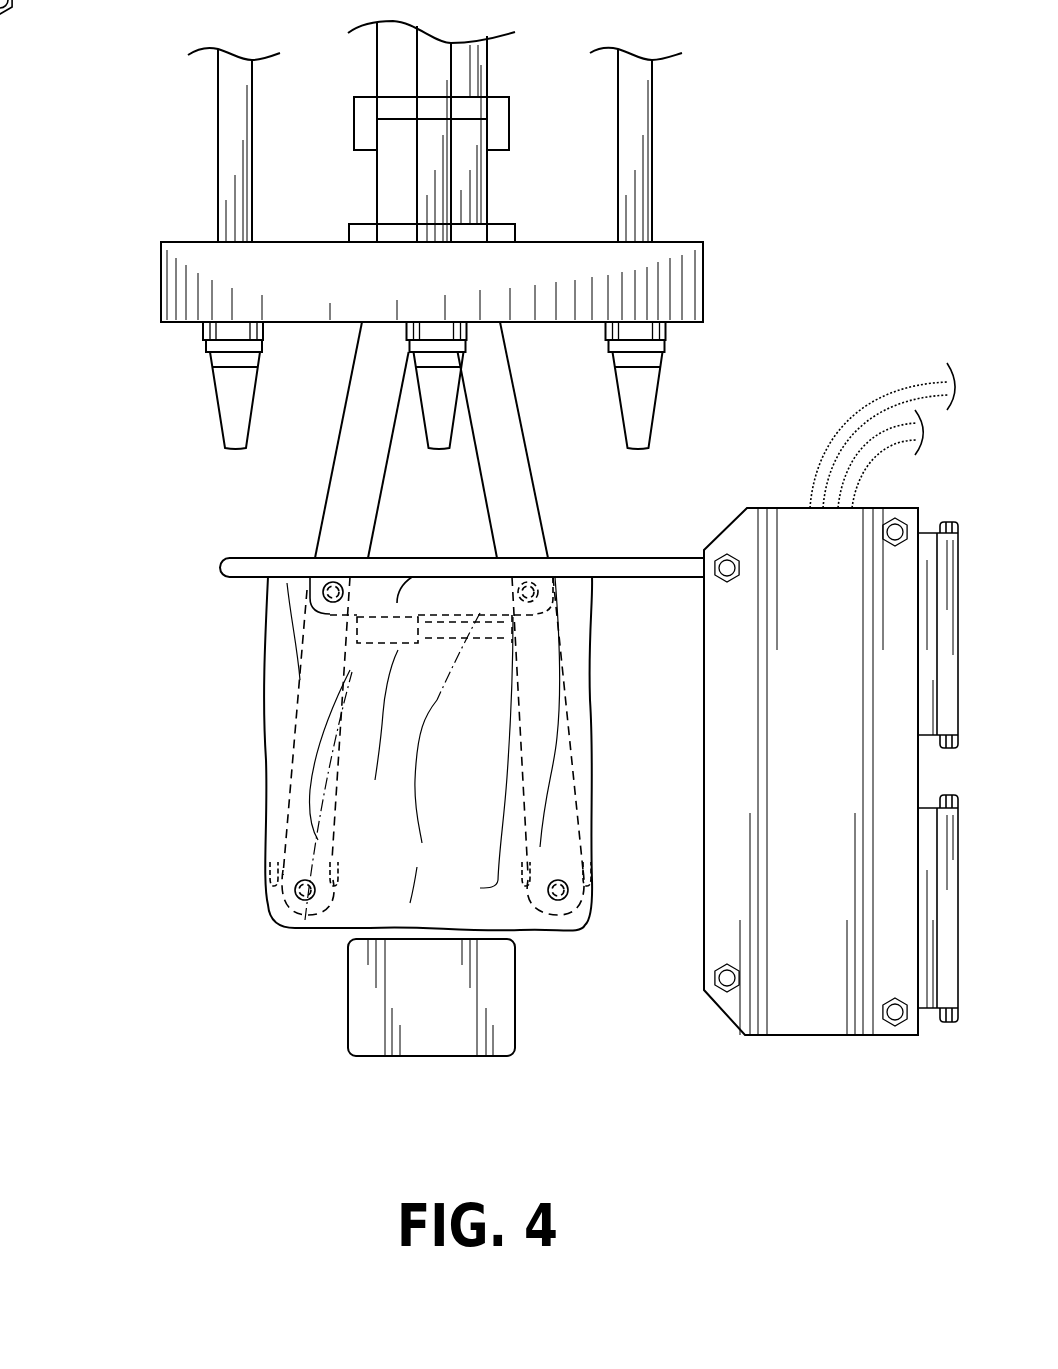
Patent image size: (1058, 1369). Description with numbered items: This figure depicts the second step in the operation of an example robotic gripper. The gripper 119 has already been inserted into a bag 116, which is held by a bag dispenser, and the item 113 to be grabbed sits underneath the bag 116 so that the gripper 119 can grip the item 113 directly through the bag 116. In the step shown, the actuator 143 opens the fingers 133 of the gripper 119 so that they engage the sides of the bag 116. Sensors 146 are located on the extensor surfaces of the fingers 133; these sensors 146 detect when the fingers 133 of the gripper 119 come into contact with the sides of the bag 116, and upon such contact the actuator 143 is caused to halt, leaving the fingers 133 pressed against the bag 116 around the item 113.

The item 113 is at (449, 1008).
The bag 116 is at (468, 798).
The gripper 119 is at (117, 587).
The fingers 133 is at (280, 744).
The actuator 143 is at (433, 639).
The sensors 146 is at (262, 873).